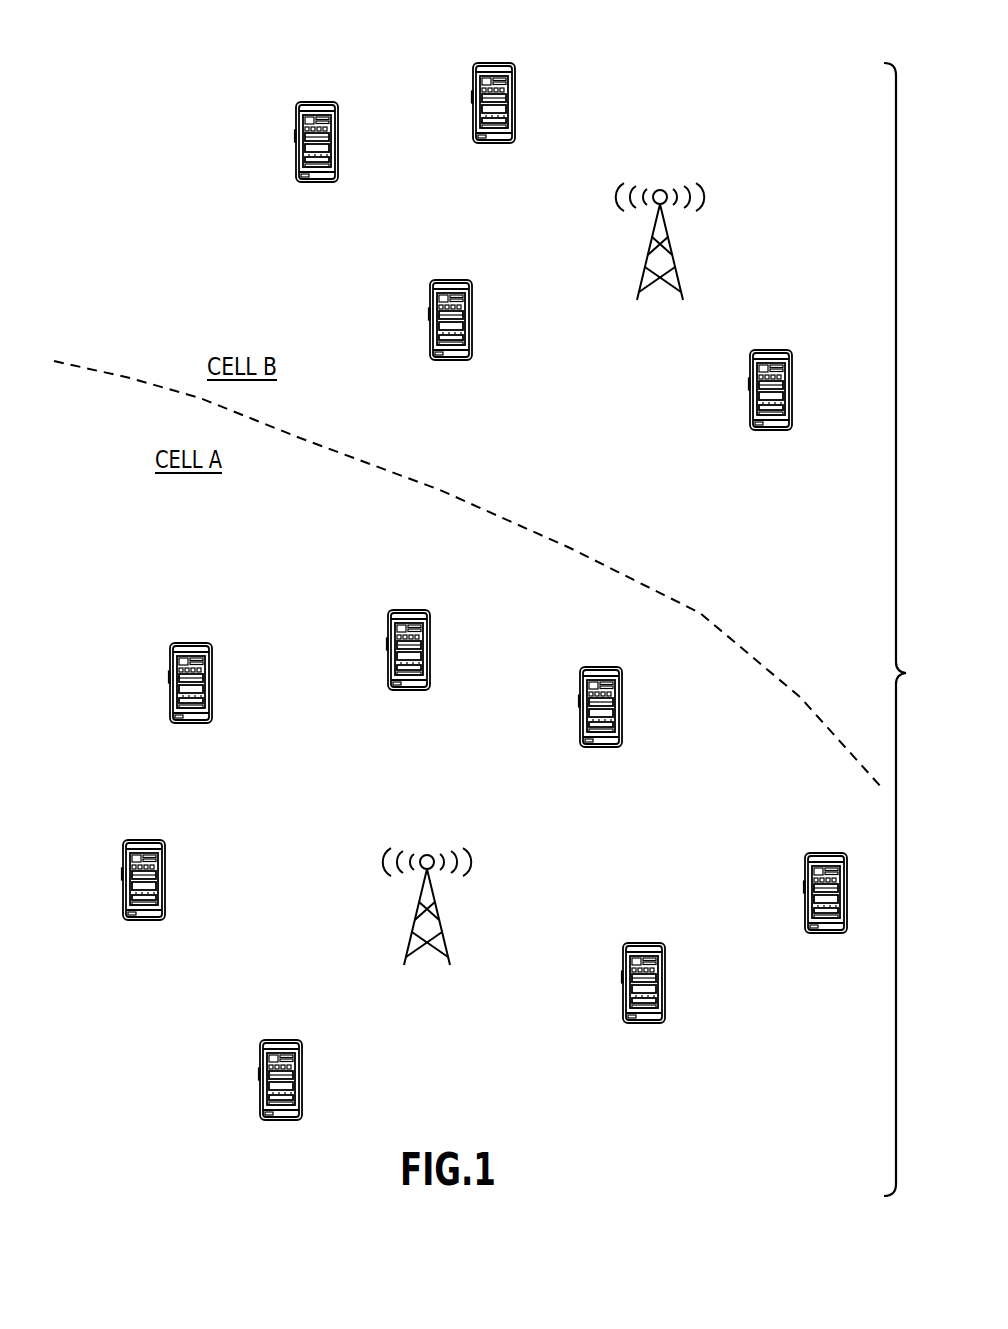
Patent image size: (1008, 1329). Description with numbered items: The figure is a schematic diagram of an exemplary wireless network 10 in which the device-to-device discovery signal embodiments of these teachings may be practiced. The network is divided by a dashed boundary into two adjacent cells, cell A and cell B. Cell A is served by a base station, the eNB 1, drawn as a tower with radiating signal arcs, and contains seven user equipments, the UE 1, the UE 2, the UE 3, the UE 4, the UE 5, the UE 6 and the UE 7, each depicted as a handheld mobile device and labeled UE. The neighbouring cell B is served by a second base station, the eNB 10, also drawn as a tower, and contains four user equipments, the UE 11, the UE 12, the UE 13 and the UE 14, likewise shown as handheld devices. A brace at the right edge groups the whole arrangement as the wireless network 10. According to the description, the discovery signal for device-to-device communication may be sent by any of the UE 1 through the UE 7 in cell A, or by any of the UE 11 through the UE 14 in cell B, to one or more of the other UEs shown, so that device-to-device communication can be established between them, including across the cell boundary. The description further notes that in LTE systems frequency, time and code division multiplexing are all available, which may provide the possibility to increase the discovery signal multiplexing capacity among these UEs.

The wireless network 10 is at (650, 254).
The UE1 1 is at (416, 919).
The UE2 2 is at (430, 650).
The UE3 3 is at (165, 883).
The UE4 4 is at (260, 1083).
The UE5 5 is at (665, 987).
The UE6 6 is at (622, 705).
The UE7 7 is at (805, 900).
The UE11 11 is at (472, 325).
The UE12 12 is at (296, 146).
The UE13 13 is at (750, 396).
The UE14 14 is at (473, 104).